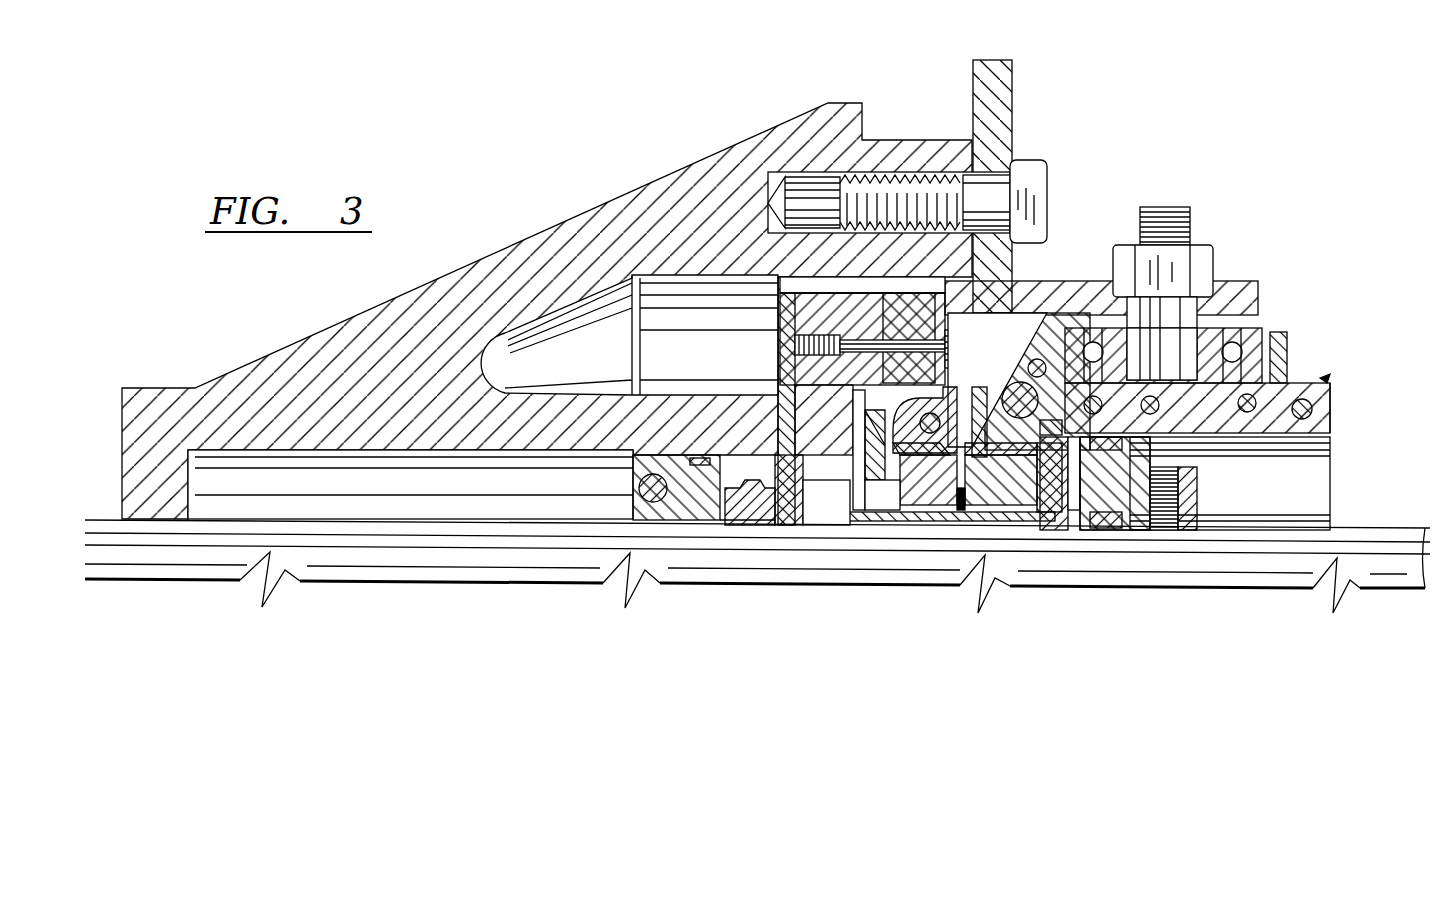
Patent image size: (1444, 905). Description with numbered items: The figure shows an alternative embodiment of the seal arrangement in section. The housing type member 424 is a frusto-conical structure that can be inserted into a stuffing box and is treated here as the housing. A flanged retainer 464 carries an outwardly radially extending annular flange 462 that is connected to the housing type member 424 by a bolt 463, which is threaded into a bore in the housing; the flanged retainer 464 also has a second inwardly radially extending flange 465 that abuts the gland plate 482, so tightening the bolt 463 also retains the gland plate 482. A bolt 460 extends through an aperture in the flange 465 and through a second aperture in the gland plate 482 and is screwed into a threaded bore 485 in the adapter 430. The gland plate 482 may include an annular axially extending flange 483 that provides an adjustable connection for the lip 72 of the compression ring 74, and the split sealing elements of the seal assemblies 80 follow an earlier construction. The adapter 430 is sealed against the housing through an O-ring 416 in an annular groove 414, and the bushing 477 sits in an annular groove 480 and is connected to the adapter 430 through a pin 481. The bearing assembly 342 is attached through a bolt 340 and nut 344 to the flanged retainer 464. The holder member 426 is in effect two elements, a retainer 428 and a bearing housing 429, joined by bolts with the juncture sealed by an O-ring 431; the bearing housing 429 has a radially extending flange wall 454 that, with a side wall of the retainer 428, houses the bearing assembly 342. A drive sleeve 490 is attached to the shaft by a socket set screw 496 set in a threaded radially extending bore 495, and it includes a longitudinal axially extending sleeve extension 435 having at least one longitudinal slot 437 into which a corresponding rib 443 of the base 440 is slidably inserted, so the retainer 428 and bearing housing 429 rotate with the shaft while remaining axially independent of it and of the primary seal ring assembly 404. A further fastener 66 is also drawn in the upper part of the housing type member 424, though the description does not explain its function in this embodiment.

The housing type member 424 is at (545, 250).
The set screw 66 is at (905, 185).
The outwardly radially extending annular flange 462 is at (993, 100).
The bolt 463 is at (1028, 185).
The bolt 340 is at (1175, 228).
The nut 344 is at (1205, 270).
The retainer 428 is at (1010, 370).
The second inwardly radially extending flange 465 is at (1005, 325).
The flanged retainer 464 is at (1240, 300).
The bearing assembly 342 is at (1200, 332).
The radially extending flange wall 454 is at (1275, 368).
The holder member 426 is at (1325, 378).
The bearing housing 429 is at (1320, 425).
The adapter 430 is at (790, 305).
The gland plate 482 is at (860, 305).
The bolt 460 is at (886, 342).
The threaded bore 485 is at (788, 362).
The lip 72 is at (862, 400).
The compression ring 74 is at (870, 470).
The O-ring 431 is at (1060, 422).
The annular groove 414 is at (650, 468).
The O-ring 416 is at (700, 460).
The annular axially extending flange 483 is at (790, 405).
The annular groove 480 is at (720, 488).
The pin 481 is at (795, 498).
The bushing 477 is at (727, 492).
The sleeve extension 435 is at (860, 512).
The seal assemblies 80 is at (883, 498).
The longitudinal slot 437 is at (925, 505).
The primary seal ring assembly 404 is at (1020, 503).
The base 440 is at (1048, 512).
The rib 443 is at (1058, 500).
The drive sleeve 490 is at (1135, 530).
The threaded radially extending bore 495 is at (1175, 525).
The socket set screw 496 is at (1195, 468).